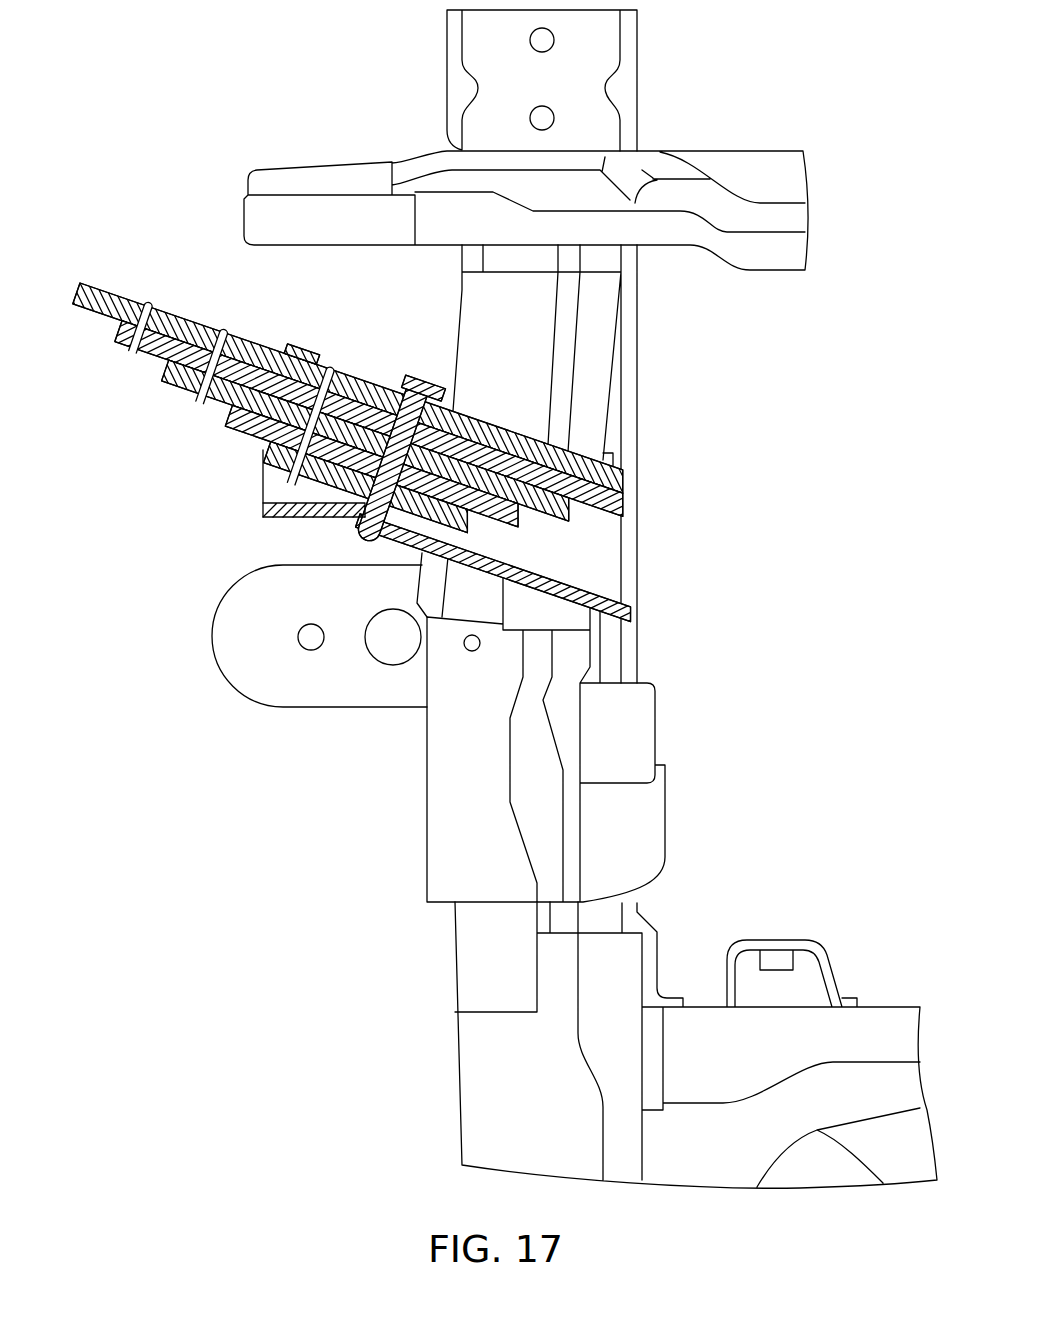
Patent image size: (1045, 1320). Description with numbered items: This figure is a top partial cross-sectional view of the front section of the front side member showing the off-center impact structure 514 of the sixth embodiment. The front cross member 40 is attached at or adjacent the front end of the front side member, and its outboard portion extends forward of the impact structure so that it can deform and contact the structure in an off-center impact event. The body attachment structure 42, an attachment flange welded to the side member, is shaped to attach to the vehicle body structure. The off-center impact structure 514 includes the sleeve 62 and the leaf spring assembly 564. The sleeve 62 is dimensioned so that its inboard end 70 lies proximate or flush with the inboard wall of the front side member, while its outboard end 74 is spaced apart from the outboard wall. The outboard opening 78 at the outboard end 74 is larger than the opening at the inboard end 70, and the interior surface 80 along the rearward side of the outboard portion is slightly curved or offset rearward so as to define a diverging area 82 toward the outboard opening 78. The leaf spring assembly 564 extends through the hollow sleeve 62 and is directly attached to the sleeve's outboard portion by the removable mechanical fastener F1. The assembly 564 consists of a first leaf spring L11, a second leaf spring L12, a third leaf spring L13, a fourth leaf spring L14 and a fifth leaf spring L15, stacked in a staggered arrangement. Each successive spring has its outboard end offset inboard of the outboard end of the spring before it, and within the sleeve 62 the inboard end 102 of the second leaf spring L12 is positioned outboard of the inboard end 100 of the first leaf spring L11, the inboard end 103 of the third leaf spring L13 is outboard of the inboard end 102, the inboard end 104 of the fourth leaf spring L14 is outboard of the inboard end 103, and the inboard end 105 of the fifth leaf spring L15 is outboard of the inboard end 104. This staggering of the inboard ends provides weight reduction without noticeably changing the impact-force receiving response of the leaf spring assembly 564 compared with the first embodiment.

The front cross member 40 is at (310, 163).
The body attachment structure 42 is at (262, 657).
The leaf spring assembly 564 is at (437, 443).
The first leaf spring L11 is at (73, 292).
The second leaf spring L12 is at (118, 341).
The third leaf spring L13 is at (163, 385).
The fourth leaf spring L14 is at (223, 423).
The fifth leaf spring L15 is at (260, 465).
The sleeve 62 is at (302, 355).
The inboard end 70 is at (631, 478).
The outboard end 74 is at (279, 497).
The outboard opening 78 is at (262, 453).
The interior surface 80 is at (300, 492).
The diverging area 82 is at (262, 488).
The inboard end 100 is at (628, 498).
The inboard end 102 is at (570, 505).
The inboard end 103 is at (520, 505).
The inboard end 104 is at (473, 517).
The inboard end 105 is at (432, 560).
The off-center impact structure 514 is at (623, 467).
The mechanical fastener F1 is at (474, 420).